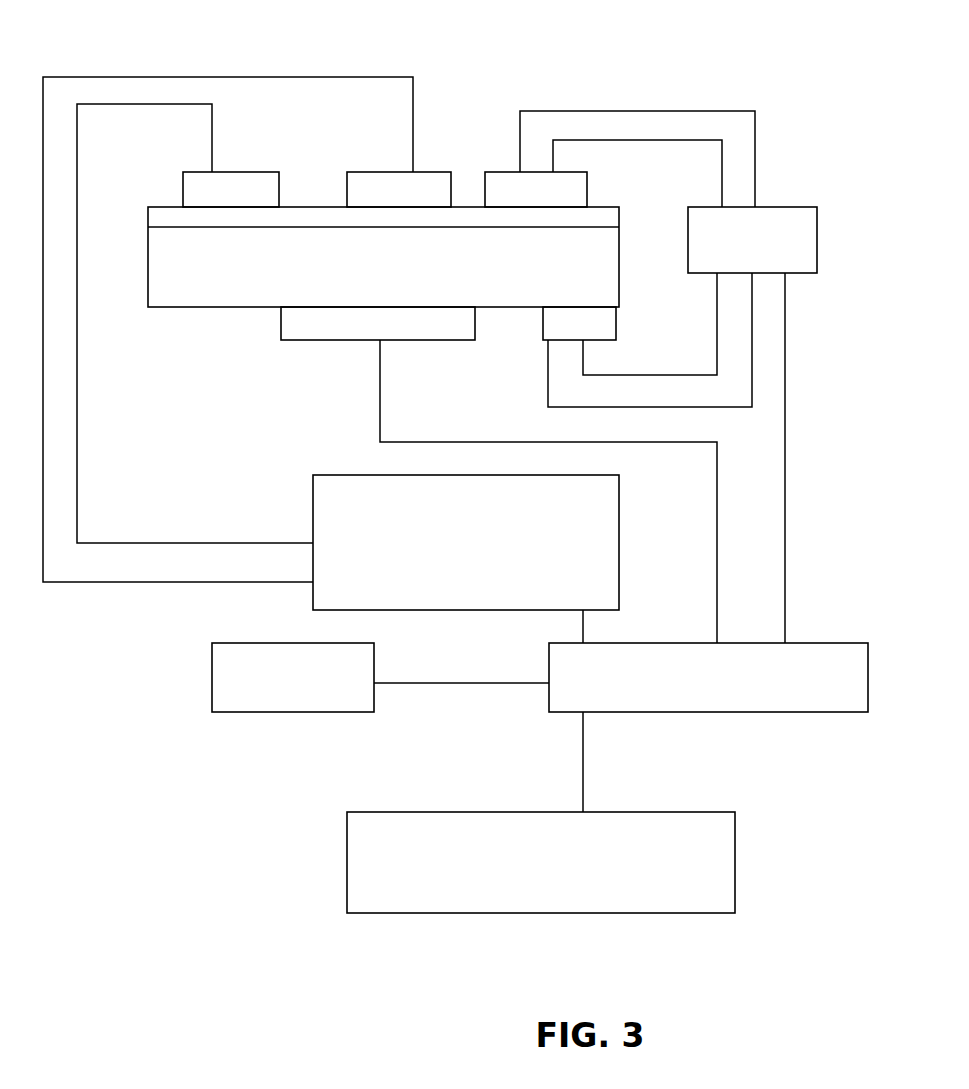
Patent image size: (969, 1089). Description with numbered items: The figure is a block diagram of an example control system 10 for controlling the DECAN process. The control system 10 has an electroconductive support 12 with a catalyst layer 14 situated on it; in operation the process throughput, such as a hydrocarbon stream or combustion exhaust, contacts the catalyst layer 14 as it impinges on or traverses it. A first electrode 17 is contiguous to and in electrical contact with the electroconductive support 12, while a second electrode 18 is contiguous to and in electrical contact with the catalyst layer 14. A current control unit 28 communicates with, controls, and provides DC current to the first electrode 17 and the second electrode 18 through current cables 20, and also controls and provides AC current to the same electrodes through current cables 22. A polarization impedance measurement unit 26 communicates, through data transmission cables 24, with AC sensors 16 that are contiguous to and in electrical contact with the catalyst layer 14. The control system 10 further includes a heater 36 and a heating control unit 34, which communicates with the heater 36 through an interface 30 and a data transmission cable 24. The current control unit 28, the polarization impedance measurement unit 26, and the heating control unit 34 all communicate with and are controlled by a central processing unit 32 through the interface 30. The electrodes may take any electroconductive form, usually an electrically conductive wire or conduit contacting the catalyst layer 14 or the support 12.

The control system 10 is at (184, 795).
The electroconductive support 12 is at (359, 270).
The catalyst layer 14 is at (179, 216).
The AC sensors 16 is at (245, 178).
The first electrode 17 is at (563, 320).
The second electrode 18 is at (502, 184).
The current cables 20 is at (682, 143).
The current cables 22 is at (650, 108).
The data transmission cables 24 is at (282, 75).
The polarization impedance measurement unit 26 is at (459, 545).
The current control unit 28 is at (736, 245).
The interface 30 is at (696, 680).
The central processing unit 32 is at (528, 875).
The heating control unit 34 is at (269, 685).
The heater 36 is at (313, 322).